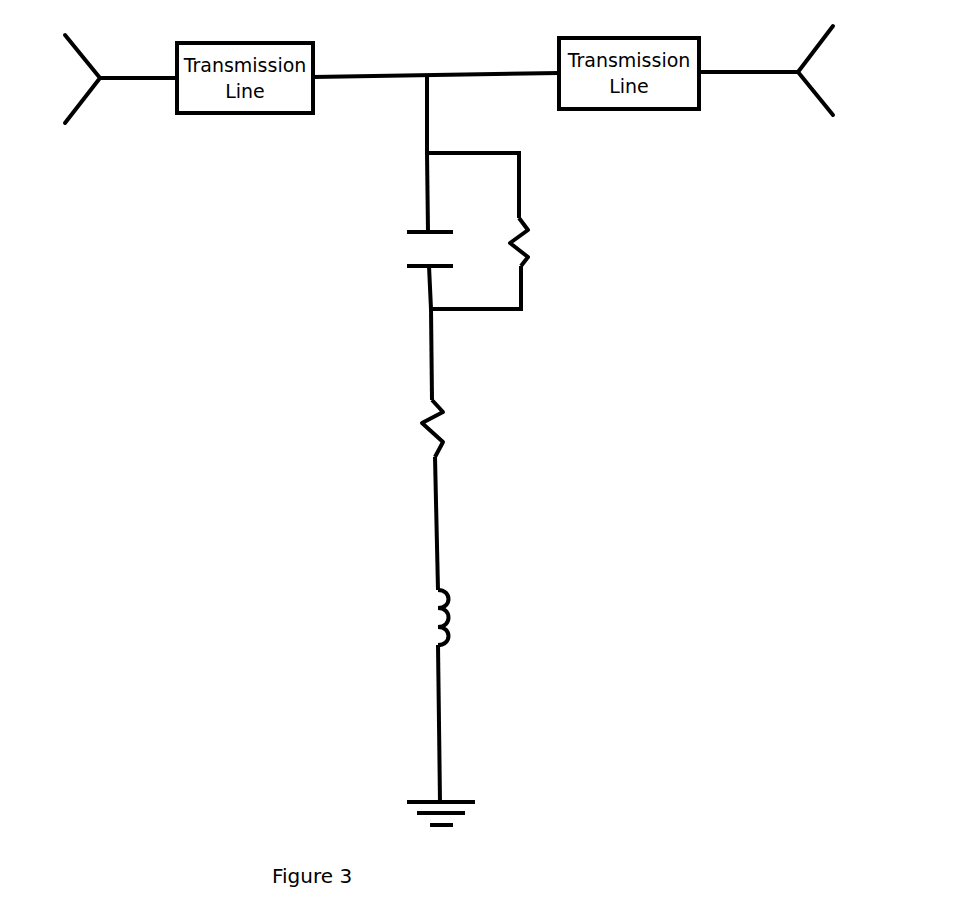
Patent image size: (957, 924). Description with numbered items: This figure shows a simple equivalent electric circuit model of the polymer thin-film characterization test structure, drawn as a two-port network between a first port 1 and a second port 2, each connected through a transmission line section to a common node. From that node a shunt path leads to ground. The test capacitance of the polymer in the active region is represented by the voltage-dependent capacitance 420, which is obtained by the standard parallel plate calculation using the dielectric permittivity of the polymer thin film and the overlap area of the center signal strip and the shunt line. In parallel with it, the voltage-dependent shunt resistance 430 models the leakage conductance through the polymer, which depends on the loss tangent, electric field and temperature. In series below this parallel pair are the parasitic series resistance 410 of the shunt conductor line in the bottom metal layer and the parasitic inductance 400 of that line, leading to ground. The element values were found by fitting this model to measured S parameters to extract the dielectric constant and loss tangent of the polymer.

The first port 1 is at (108, 79).
The second port 2 is at (778, 70).
The inductance 400 is at (450, 635).
The series resistance 410 is at (446, 422).
The capacitance 420 is at (405, 256).
The shunt resistance 430 is at (533, 255).